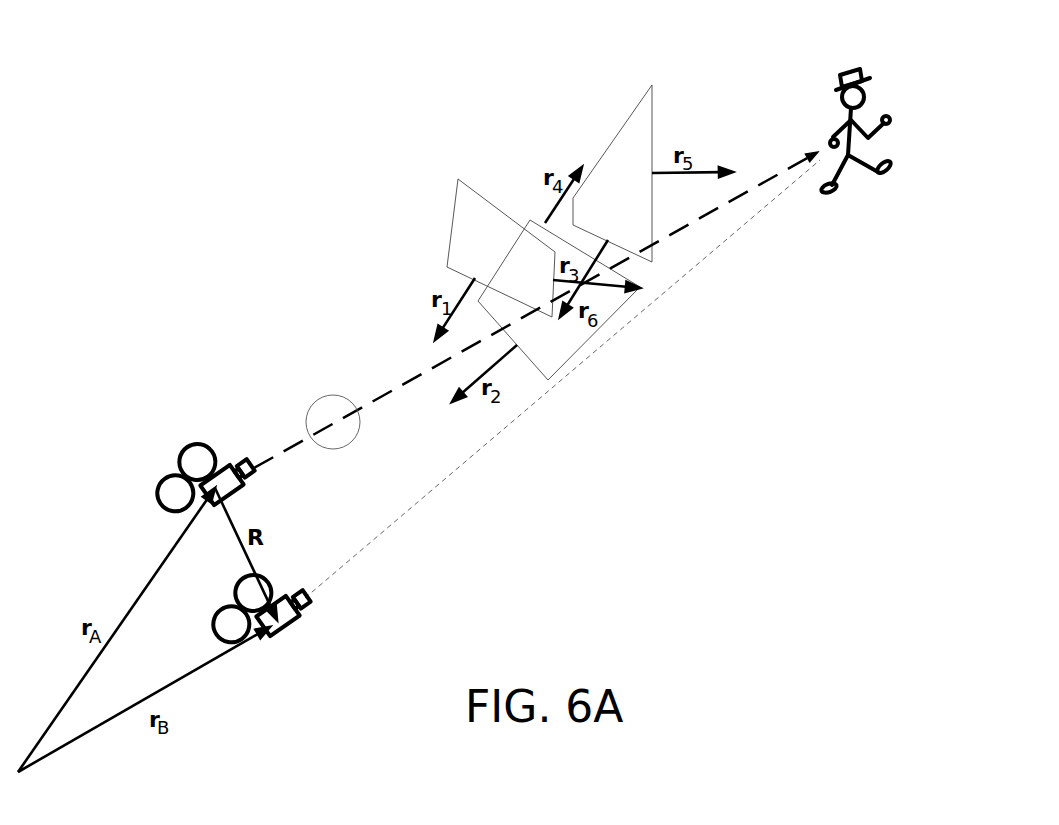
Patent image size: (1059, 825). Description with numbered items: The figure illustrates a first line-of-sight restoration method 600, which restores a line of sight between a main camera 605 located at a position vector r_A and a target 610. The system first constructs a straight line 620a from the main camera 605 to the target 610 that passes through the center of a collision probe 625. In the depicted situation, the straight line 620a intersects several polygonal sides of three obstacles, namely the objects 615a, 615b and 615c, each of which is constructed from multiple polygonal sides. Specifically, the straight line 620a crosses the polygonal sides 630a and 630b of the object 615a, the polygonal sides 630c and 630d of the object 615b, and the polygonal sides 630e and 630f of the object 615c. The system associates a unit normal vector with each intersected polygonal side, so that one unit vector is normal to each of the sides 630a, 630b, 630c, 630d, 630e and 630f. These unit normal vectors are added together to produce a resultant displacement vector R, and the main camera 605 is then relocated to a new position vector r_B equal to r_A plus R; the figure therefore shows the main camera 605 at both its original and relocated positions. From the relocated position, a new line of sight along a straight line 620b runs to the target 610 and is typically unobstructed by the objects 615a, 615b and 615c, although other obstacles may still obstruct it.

The line-of-sight restoration method 600 is at (625, 570).
The main camera 605 is at (199, 442).
The target 610 is at (838, 77).
The object 615a is at (501, 248).
The object 615b is at (559, 300).
The object 615c is at (612, 173).
The straight line 620a is at (400, 382).
The straight line 620b is at (455, 474).
The collision probe 625 is at (340, 452).
The polygonal side 630a is at (447, 268).
The polygonal side 630b is at (596, 330).
The polygonal side 630c is at (548, 381).
The polygonal side 630d is at (532, 217).
The polygonal side 630e is at (652, 127).
The polygonal side 630f is at (655, 262).